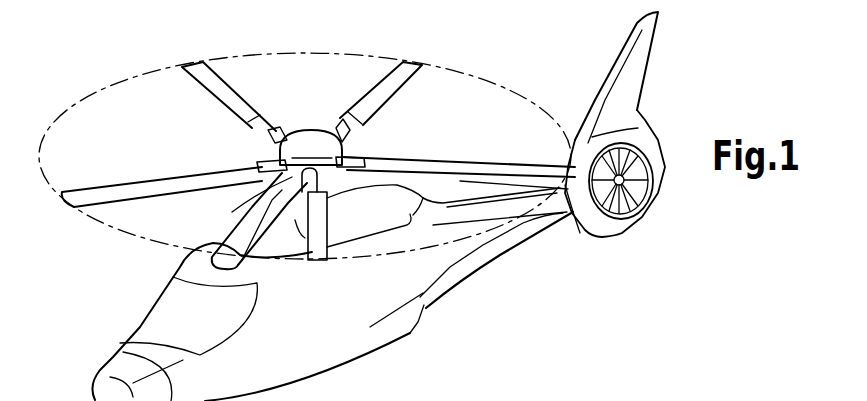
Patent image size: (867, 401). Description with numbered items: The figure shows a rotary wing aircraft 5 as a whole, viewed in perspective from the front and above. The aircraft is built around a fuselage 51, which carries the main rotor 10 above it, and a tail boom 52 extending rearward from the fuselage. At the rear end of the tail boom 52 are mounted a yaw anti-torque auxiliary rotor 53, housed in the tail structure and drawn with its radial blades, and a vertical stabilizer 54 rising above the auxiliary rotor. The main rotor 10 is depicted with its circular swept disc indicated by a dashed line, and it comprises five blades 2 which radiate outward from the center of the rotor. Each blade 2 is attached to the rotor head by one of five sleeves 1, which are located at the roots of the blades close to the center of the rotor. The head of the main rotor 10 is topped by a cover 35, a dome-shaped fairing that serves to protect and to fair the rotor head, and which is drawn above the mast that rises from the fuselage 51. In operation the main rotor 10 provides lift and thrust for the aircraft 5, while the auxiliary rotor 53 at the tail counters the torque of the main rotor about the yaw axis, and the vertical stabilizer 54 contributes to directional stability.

The sleeve 1 is at (280, 127).
The blade 2 is at (217, 78).
The rotary wing aircraft 5 is at (112, 275).
The main rotor 10 is at (133, 77).
The cover 35 is at (308, 138).
The fuselage 51 is at (297, 350).
The tail boom 52 is at (513, 245).
The yaw anti-torque auxiliary rotor 53 is at (630, 200).
The vertical stabilizer 54 is at (635, 63).